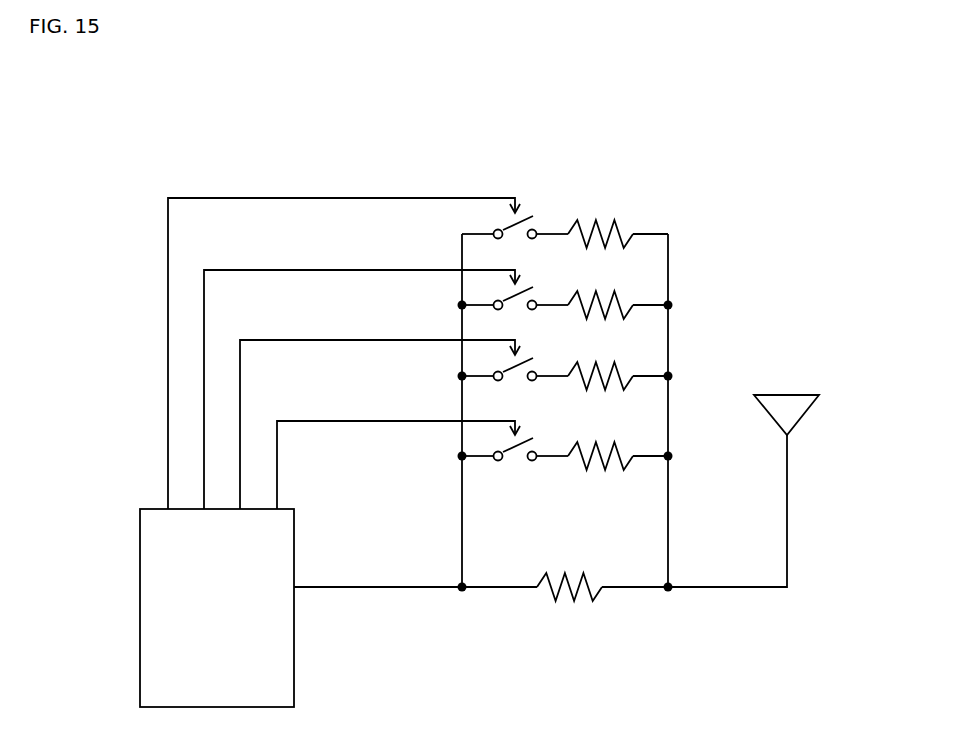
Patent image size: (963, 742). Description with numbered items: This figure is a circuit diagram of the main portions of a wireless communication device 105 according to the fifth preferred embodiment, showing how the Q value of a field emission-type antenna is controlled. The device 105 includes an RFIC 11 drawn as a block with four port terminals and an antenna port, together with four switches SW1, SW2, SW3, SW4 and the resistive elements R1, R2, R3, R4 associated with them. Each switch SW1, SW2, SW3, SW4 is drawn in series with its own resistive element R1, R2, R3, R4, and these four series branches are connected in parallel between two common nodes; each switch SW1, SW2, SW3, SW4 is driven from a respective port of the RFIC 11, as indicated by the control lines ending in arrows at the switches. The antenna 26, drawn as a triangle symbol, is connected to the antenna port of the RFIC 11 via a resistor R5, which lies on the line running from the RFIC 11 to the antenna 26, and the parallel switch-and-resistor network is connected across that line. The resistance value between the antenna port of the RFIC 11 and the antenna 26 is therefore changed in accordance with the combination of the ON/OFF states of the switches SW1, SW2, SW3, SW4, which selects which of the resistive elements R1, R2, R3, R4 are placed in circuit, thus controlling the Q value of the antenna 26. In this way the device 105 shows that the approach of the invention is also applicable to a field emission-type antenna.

The wireless communication device 105 is at (767, 155).
The RFIC 11 is at (295, 550).
The antenna 26 is at (787, 393).
The switch SW1 is at (368, 353).
The switch SW2 is at (386, 389).
The switch SW3 is at (404, 424).
The switch SW4 is at (422, 465).
The resistive element R1 is at (618, 248).
The resistive element R2 is at (618, 320).
The resistive element R3 is at (618, 391).
The resistive element R4 is at (618, 470).
The resistor R5 is at (481, 604).